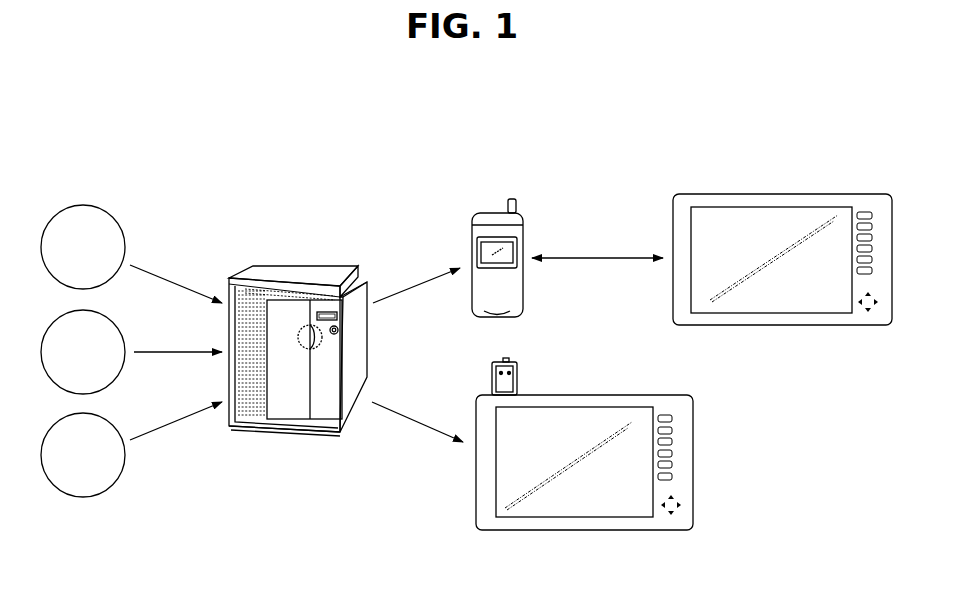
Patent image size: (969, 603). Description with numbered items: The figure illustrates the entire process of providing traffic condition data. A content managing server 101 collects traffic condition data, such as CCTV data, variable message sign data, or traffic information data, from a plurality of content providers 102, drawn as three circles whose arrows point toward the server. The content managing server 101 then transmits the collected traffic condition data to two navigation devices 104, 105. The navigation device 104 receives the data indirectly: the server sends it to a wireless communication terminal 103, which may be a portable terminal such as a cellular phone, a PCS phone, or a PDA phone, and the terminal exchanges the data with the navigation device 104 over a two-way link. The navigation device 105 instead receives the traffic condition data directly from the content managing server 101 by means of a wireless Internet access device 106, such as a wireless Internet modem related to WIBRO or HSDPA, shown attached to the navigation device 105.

The content managing server 101 is at (312, 266).
The content providers 102 is at (84, 206).
The wireless communication terminal 103 is at (494, 212).
The navigation device 104 is at (778, 194).
The navigation device 105 is at (585, 396).
The wireless Internet access device 106 is at (517, 380).